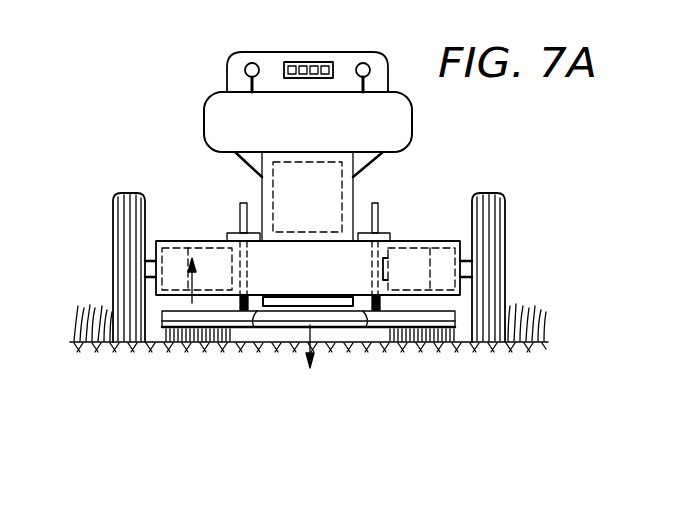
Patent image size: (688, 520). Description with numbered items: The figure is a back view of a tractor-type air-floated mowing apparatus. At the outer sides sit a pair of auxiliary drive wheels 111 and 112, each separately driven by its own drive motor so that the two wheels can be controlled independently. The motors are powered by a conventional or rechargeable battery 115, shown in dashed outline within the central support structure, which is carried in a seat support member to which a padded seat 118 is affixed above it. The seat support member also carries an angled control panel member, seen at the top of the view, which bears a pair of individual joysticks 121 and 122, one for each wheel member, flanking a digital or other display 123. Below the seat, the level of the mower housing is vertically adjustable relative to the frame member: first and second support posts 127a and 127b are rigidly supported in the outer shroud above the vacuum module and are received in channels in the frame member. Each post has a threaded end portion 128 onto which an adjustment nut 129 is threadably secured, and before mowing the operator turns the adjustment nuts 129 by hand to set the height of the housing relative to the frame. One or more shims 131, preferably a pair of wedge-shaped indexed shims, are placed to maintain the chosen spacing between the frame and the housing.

The auxiliary drive wheel 111 is at (114, 220).
The auxiliary drive wheel 112 is at (505, 218).
The battery 115 is at (325, 188).
The padded seat 118 is at (412, 125).
The joystick 121 is at (364, 63).
The joystick 122 is at (251, 63).
The display 123 is at (307, 62).
The first support post 127a is at (254, 330).
The second support post 127b is at (365, 330).
The threaded end portion 128 is at (379, 215).
The adjustment nut 129 is at (391, 237).
The shim 131 is at (298, 304).